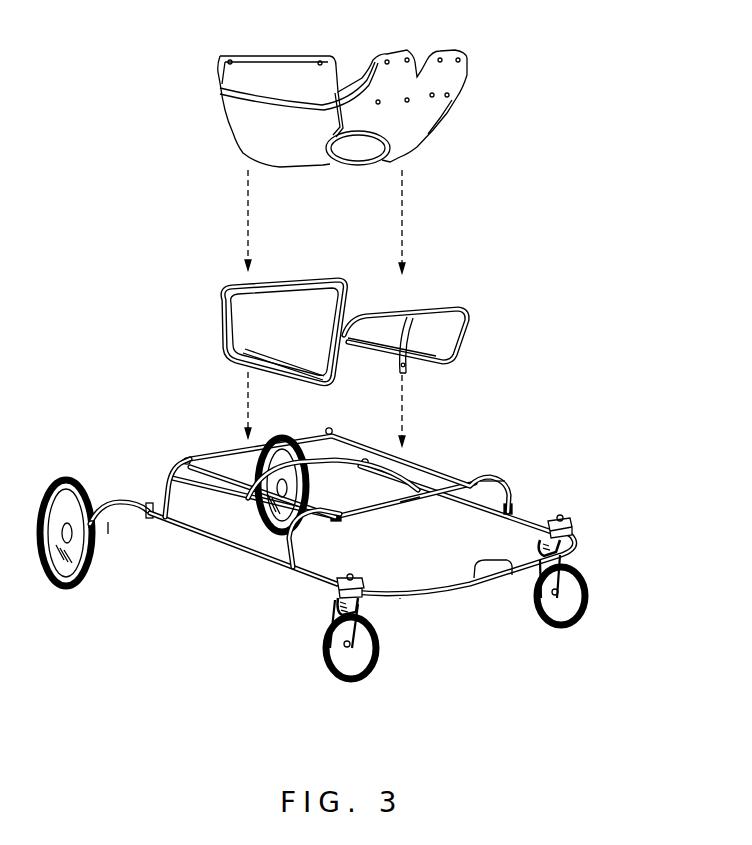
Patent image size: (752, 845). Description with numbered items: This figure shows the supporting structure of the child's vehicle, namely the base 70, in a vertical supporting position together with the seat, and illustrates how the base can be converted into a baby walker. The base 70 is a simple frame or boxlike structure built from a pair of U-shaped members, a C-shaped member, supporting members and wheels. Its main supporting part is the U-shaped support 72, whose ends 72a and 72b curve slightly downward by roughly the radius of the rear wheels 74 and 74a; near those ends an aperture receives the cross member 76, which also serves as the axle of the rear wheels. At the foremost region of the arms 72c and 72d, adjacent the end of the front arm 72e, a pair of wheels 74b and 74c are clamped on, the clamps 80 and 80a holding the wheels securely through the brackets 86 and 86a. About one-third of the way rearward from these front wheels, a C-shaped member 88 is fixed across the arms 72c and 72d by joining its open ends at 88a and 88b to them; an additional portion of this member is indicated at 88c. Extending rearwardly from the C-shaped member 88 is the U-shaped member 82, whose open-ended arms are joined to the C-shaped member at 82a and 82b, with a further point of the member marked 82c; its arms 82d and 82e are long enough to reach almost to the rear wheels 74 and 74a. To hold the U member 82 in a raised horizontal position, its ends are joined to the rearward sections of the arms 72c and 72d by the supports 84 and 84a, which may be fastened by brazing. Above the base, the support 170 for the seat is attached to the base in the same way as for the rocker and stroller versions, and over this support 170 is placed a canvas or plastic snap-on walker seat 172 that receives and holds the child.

The walker seat 172 is at (268, 80).
The support for the seat 170 is at (297, 338).
The base 70 is at (490, 546).
The U-shaped support 72 is at (430, 598).
The end of U-shaped support 72a is at (128, 497).
The end of U-shaped support 72b is at (328, 468).
The arm of U-shaped support 72c is at (222, 555).
The arm of U-shaped support 72d is at (523, 520).
The arm of U-shaped support 72e is at (478, 585).
The wheel 74 is at (72, 484).
The wheel 74a is at (280, 440).
The wheel 74b is at (588, 588).
The wheel 74c is at (370, 672).
The cross member 76 is at (108, 524).
The clamp 80 is at (357, 578).
The clamp 80a is at (573, 523).
The U-shaped member 82 is at (410, 462).
The joint of U-shaped member to C-shaped member 82a is at (470, 476).
The joint of U-shaped member to C-shaped member 82b is at (343, 514).
The upper frame corner fitting 82c is at (333, 430).
The arm of U-shaped member 82d is at (190, 455).
The arm of U-shaped member 82e is at (245, 495).
The support 84 is at (358, 440).
The support 84a is at (170, 470).
The bracket 86 is at (332, 612).
The bracket 86a is at (542, 546).
The C-shaped member 88 is at (363, 509).
The open end of C-shaped member 88a is at (300, 563).
The open end of C-shaped member 88b is at (512, 506).
The support rail section 88c is at (420, 498).